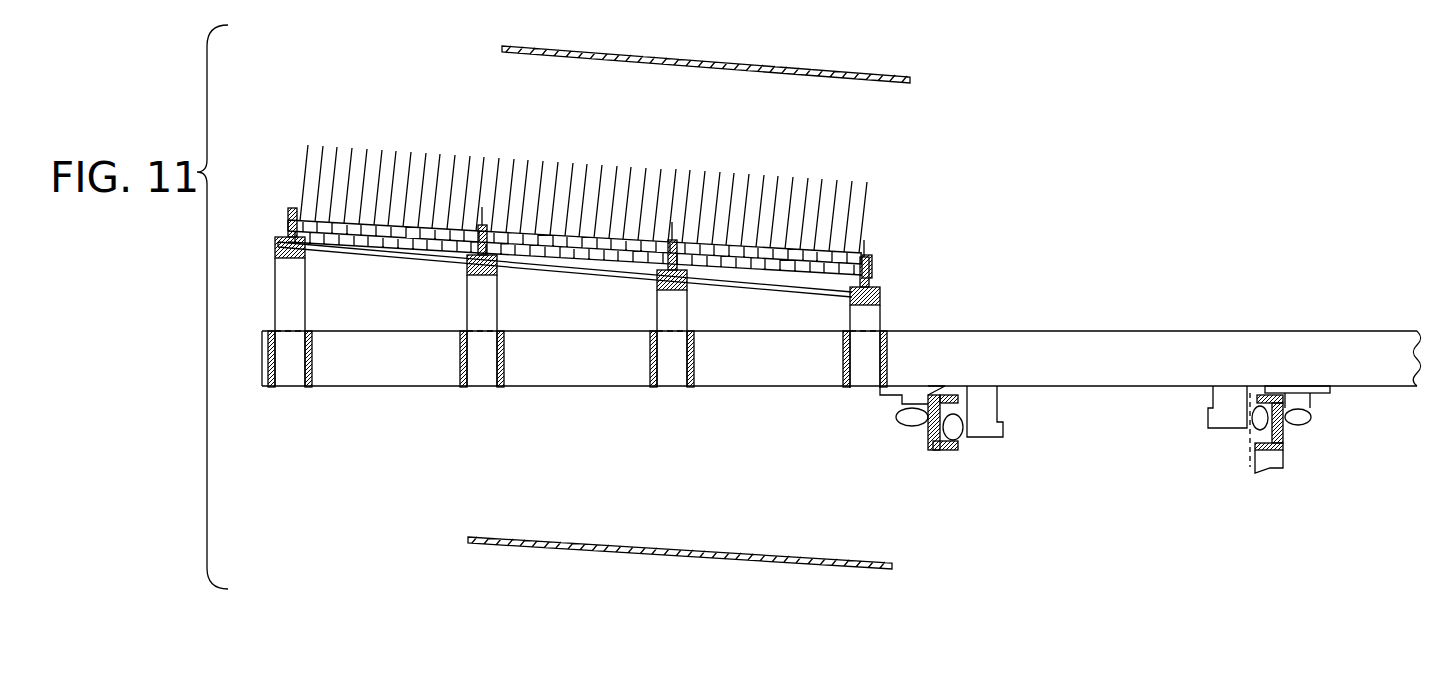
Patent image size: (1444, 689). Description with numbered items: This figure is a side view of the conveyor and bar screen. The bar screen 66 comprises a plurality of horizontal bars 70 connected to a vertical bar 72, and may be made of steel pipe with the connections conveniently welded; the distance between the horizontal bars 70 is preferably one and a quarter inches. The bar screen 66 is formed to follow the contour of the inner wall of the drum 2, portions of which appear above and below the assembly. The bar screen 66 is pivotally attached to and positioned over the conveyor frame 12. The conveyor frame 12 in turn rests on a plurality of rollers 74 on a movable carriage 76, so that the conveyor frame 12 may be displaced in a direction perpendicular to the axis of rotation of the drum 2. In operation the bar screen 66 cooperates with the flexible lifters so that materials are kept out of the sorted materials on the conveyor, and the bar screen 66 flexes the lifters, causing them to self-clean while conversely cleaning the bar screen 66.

The drum 2 is at (912, 78).
The conveyor frame 12 is at (1098, 331).
The bar screen 66 is at (262, 216).
The horizontal bars 70 is at (872, 177).
The vertical bar 72 is at (874, 265).
The rollers 74 is at (912, 427).
The movable carriage 76 is at (1247, 459).